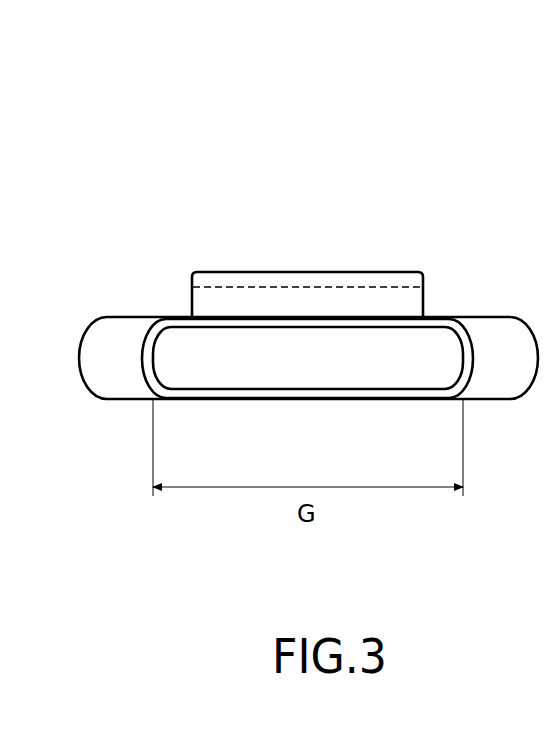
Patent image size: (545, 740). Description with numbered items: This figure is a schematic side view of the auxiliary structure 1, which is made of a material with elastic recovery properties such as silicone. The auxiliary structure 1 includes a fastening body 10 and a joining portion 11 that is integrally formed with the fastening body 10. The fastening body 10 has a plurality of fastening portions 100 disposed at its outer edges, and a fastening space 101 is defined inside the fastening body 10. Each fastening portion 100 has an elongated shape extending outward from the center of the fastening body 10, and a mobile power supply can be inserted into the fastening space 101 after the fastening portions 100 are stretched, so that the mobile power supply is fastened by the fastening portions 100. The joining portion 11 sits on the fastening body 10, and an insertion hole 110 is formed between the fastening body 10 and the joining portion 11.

The auxiliary structure 1 is at (283, 53).
The fastening body 10 is at (500, 313).
The fastening portion 100 is at (107, 363).
The fastening space 101 is at (285, 355).
The joining portion 11 is at (325, 278).
The insertion hole 110 is at (217, 300).